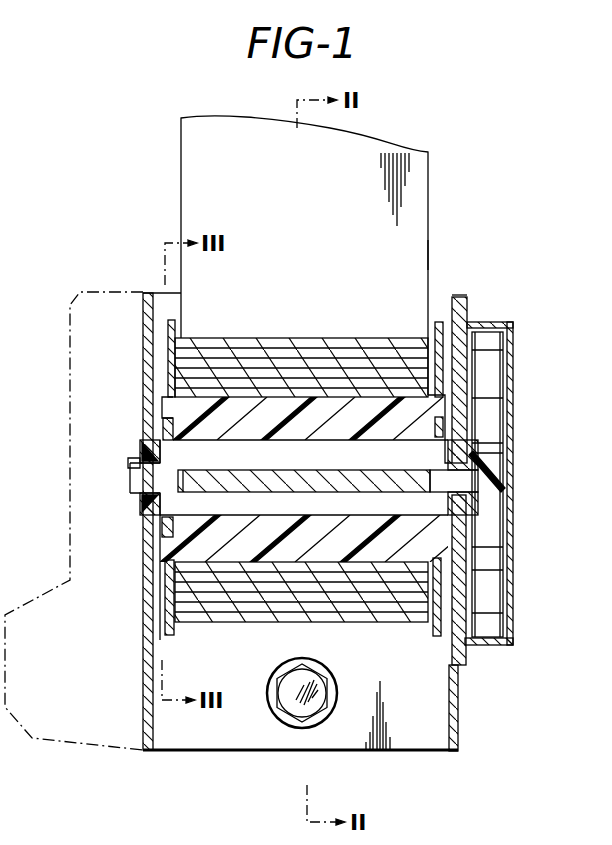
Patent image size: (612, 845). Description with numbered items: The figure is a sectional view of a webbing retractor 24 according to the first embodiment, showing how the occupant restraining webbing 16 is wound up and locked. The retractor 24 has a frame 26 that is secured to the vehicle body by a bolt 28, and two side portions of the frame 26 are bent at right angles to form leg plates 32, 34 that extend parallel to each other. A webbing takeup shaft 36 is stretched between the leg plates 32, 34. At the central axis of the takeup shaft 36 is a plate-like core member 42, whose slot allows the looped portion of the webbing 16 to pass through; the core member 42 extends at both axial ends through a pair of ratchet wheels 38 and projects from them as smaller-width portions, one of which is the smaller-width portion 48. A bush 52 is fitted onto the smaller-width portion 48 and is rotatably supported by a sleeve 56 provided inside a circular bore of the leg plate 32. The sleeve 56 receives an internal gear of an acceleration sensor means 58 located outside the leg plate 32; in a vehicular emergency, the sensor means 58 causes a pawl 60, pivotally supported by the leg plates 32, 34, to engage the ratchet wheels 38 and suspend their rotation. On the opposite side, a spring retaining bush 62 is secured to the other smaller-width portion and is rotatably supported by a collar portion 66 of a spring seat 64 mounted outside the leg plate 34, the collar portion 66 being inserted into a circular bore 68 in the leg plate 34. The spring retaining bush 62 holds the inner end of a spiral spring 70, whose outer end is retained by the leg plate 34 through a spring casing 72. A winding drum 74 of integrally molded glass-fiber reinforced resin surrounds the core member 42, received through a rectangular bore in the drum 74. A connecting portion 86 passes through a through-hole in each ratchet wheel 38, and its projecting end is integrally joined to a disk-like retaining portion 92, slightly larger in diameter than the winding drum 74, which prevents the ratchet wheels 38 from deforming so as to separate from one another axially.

The occupant restraining webbing 16 is at (415, 192).
The webbing retractor 24 is at (434, 262).
The frame 26 is at (416, 750).
The bolt 28 is at (290, 705).
The leg plate 32 is at (153, 650).
The leg plate 34 is at (459, 702).
The webbing takeup shaft 36 is at (348, 375).
The ratchet wheel 38 is at (176, 325).
The core member 42 is at (355, 505).
The smaller-width portion 48 is at (130, 490).
The bush 52 is at (135, 462).
The sleeve 56 is at (160, 448).
The acceleration sensor means 58 is at (90, 305).
The pawl 60 is at (163, 605).
The spring retaining bush 62 is at (494, 472).
The spring seat 64 is at (465, 605).
The collar portion 66 is at (452, 488).
The circular bore 68 is at (445, 448).
The spiral spring 70 is at (488, 434).
The spring casing 72 is at (513, 430).
The winding drum 74 is at (330, 413).
The connecting portion 86 is at (170, 410).
The retaining portion 92 is at (160, 528).